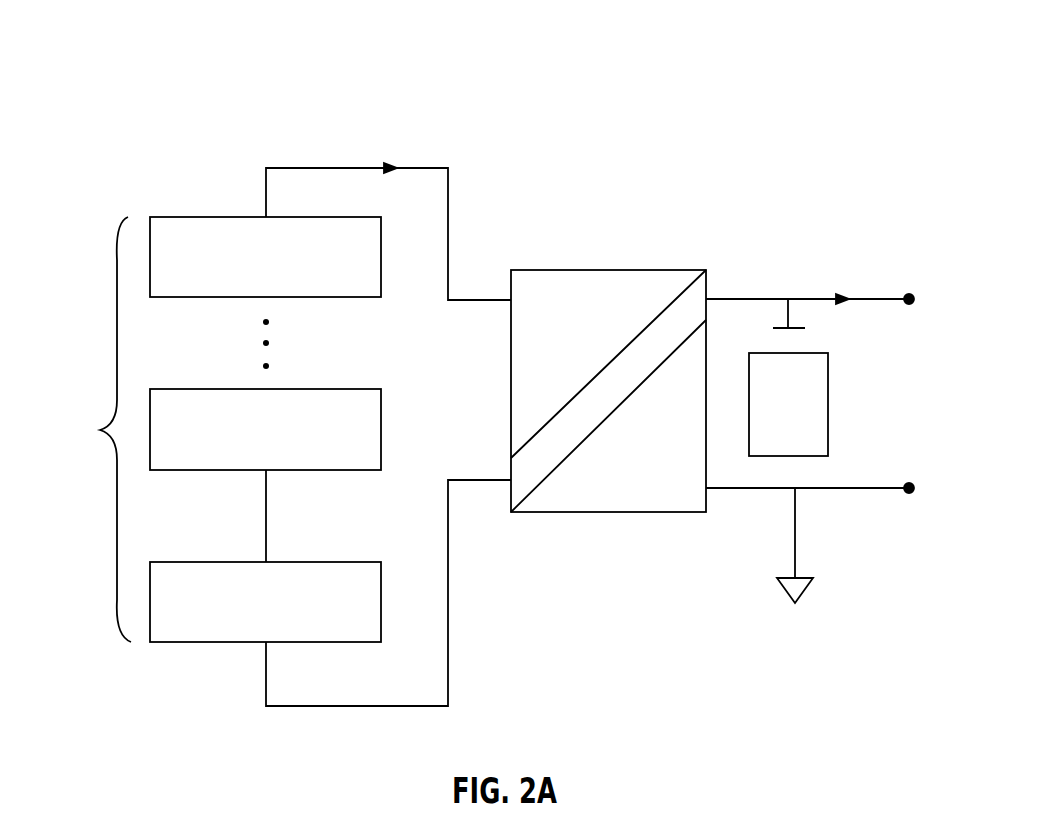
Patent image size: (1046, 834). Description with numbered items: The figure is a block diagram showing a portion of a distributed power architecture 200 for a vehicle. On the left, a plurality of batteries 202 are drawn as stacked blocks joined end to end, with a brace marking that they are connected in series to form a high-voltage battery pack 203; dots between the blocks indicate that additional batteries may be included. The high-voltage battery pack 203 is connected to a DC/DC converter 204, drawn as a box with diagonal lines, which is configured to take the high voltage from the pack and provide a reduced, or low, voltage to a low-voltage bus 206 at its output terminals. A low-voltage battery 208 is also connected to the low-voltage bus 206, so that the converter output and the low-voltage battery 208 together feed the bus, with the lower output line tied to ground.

The distributed power architecture 200 is at (812, 60).
The batteries 202 is at (222, 216).
The high-voltage battery pack 203 is at (90, 429).
The DC/DC converter 204 is at (597, 268).
The low-voltage bus 206 is at (908, 285).
The low-voltage battery 208 is at (805, 350).